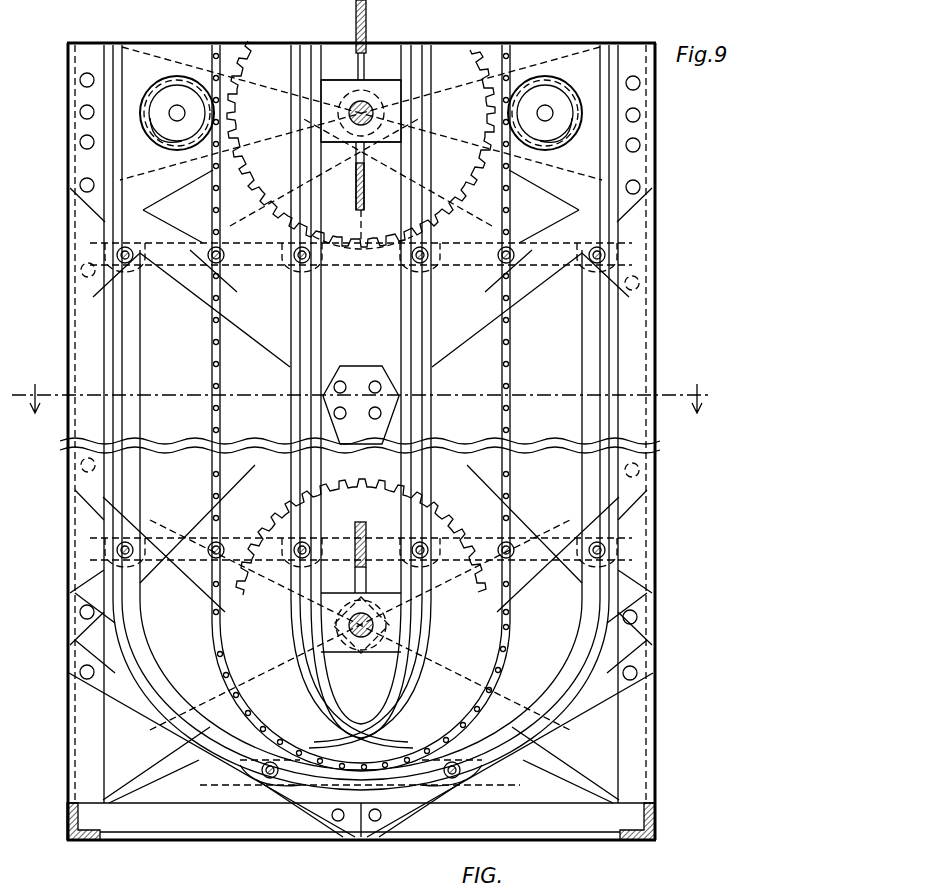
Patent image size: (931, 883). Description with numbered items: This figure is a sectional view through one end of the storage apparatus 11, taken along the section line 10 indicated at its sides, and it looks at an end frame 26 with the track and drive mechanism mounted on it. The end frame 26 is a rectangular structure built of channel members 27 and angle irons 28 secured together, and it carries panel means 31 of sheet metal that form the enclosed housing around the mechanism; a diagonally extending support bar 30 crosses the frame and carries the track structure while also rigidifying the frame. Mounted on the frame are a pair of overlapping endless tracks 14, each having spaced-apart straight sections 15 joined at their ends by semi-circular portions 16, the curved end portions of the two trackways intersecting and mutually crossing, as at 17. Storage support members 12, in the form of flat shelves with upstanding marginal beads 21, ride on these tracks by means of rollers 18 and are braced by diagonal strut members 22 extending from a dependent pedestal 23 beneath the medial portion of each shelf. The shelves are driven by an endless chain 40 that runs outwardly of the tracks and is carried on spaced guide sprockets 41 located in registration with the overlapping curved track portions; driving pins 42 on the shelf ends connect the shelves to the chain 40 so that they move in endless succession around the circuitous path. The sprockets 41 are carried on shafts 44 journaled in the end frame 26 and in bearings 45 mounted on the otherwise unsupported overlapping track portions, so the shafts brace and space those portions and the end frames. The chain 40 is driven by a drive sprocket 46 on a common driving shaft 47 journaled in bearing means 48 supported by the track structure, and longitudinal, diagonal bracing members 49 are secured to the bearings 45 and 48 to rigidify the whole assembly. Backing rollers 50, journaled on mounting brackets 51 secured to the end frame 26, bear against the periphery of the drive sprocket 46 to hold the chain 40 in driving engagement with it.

The section line 10 is at (366, 388).
The storage apparatus 11 is at (663, 836).
The storage support member 12 is at (240, 250).
The endless track 14 is at (160, 683).
The straight section 15 is at (322, 316).
The semi-circular portion 16 is at (200, 770).
The crossing of track portions 17 is at (364, 715).
The roller 18 is at (112, 265).
The marginal flange or bead 21 is at (104, 535).
The diagonal strut member 22 is at (170, 282).
The dependent pedestal 23 is at (208, 268).
The end frame 26 is at (60, 836).
The channel member 27 is at (661, 518).
The angle iron 28 is at (172, 832).
The support bar 30 is at (262, 345).
The panel means 31 is at (657, 226).
The endless chain 40 is at (211, 367).
The sprocket 41 is at (340, 486).
The driving pin 42 is at (215, 250).
The shaft 44 is at (361, 640).
The bearing 45 is at (375, 595).
The drive sprocket 46 is at (361, 144).
The driving shaft 47 is at (366, 124).
The bearing means 48 is at (388, 80).
The bracing member 49 is at (355, 21).
The backing roller 50 is at (175, 151).
The mounting bracket 51 is at (177, 63).